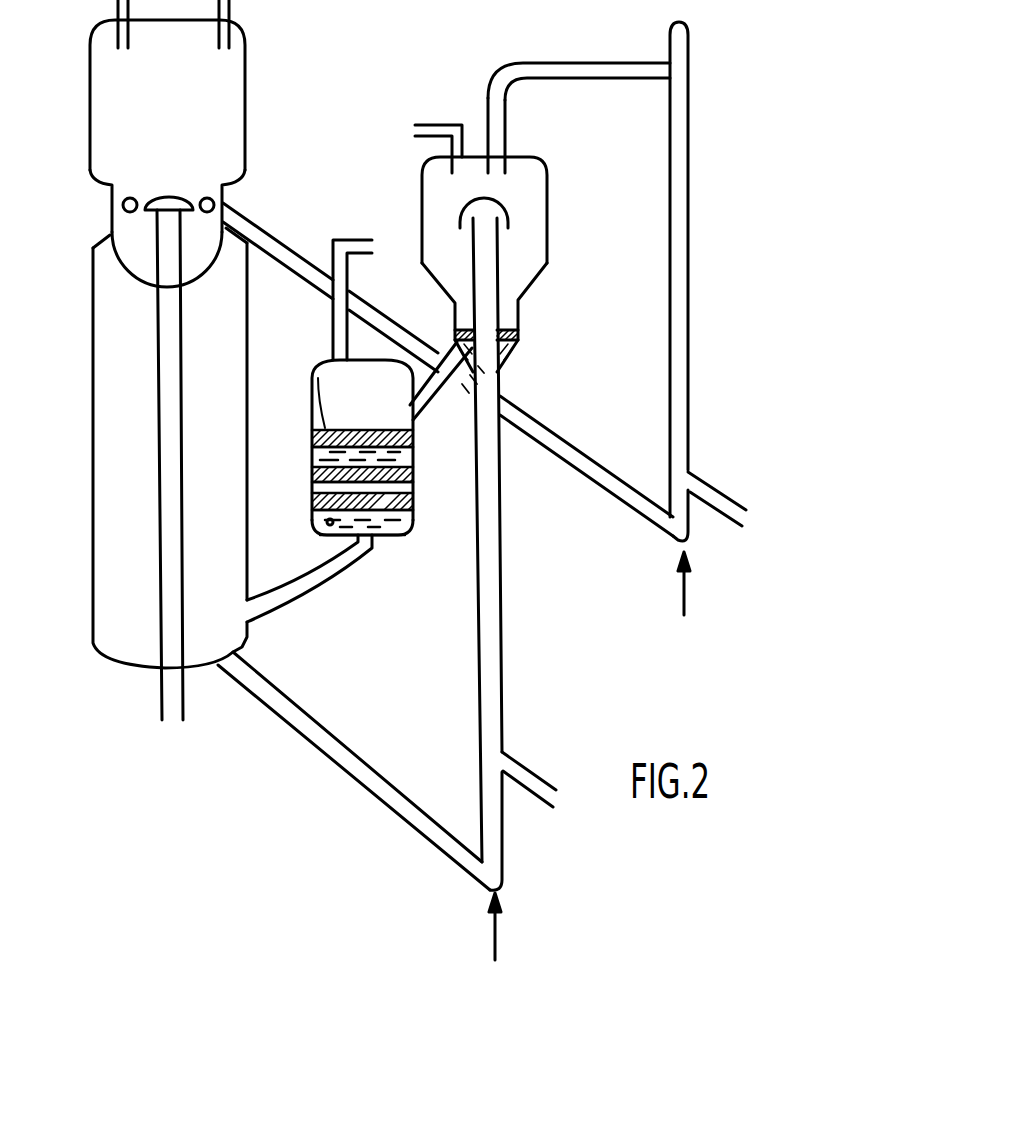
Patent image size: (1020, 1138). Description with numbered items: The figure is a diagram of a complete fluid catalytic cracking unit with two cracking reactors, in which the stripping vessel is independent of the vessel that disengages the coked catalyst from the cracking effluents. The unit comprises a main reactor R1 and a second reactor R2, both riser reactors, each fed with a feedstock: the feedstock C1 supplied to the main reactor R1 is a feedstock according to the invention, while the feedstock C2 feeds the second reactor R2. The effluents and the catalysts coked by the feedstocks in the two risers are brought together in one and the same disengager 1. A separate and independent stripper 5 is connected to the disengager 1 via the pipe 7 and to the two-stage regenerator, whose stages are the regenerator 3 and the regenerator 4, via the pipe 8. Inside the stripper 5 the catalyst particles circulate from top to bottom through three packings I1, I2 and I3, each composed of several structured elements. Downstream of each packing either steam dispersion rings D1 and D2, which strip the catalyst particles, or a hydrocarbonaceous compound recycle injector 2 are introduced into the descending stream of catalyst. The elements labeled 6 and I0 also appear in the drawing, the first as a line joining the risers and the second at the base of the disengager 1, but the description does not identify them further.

The disengager 1 is at (547, 240).
The hydrocarbonaceous compound recycle injector 2 is at (455, 458).
The regenerator stage 3 is at (93, 515).
The regenerator stage 4 is at (245, 133).
The stripper 5 is at (392, 538).
The transfer pipe 6 is at (627, 62).
The pipe 7 is at (440, 386).
The pipe 8 is at (287, 600).
The main reactor R1 is at (498, 670).
The secondary reactor R2 is at (685, 368).
The feedstock C1 is at (535, 786).
The feedstock C2 is at (721, 499).
The inlet tray I0 is at (518, 334).
The packing I1 is at (312, 503).
The packing I2 is at (312, 488).
The packing I3 is at (328, 428).
The steam dispersion ring D1 is at (333, 532).
The steam dispersion ring D2 is at (312, 455).